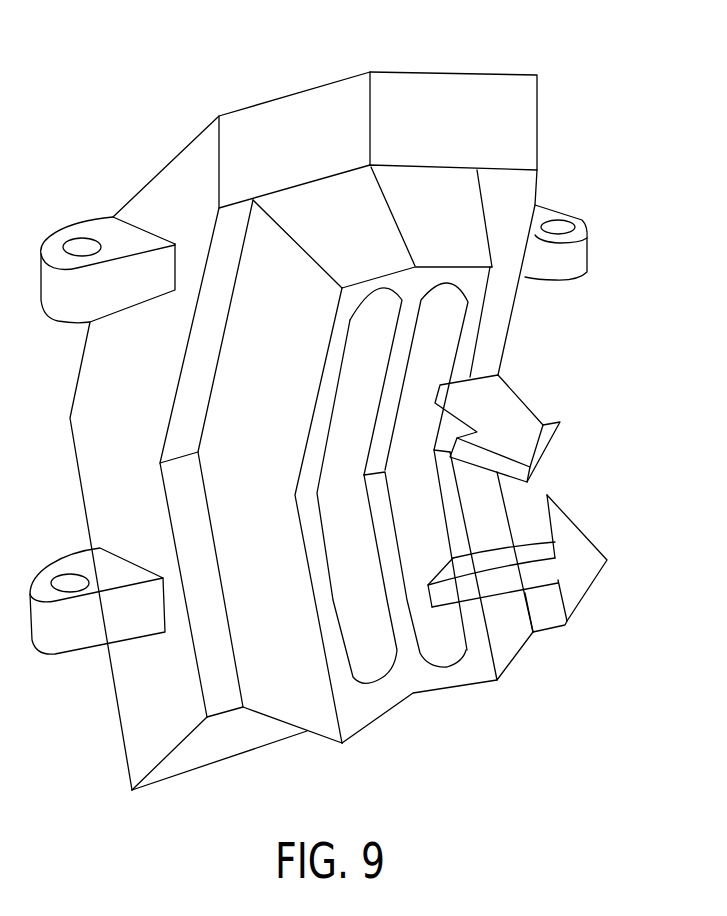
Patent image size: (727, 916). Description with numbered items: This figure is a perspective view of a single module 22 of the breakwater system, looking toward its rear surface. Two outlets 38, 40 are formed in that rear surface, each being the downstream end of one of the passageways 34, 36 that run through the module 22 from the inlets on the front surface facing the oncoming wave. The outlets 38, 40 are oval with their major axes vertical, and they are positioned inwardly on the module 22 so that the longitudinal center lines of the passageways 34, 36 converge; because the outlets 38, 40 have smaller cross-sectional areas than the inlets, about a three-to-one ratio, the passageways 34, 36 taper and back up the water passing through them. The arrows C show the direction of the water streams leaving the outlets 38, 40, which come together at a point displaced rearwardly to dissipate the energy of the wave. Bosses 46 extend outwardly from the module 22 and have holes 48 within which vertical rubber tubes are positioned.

The module 22 is at (451, 73).
The passageway 34 is at (380, 670).
The passageway 36 is at (432, 535).
The outlet 38 is at (368, 632).
The outlet 40 is at (480, 680).
The boss 46 is at (59, 306).
The hole 48 is at (82, 247).
The arrows C is at (545, 424).